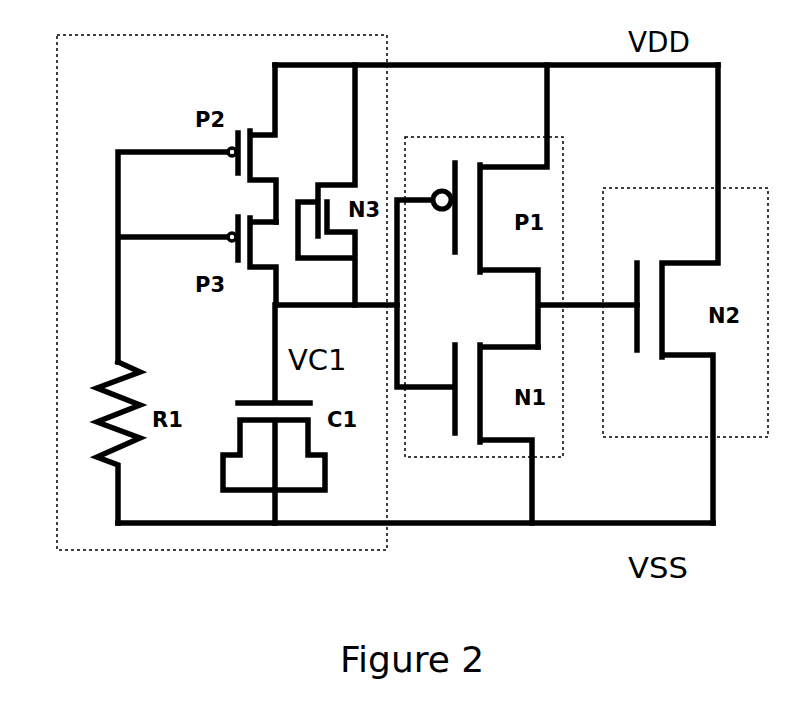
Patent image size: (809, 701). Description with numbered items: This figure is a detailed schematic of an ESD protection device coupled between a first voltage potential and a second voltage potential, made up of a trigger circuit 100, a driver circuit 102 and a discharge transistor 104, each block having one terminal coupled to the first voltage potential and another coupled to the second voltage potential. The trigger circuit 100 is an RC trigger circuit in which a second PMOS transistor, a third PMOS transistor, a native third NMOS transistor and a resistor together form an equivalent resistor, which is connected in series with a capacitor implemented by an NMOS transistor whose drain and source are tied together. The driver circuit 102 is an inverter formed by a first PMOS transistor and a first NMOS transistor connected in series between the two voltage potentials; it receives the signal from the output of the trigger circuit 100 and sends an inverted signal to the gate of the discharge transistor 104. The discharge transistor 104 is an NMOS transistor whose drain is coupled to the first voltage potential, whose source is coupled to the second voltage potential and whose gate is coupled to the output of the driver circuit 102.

The trigger circuit 100 is at (184, 547).
The driver circuit 102 is at (457, 459).
The discharge transistor 104 is at (660, 437).